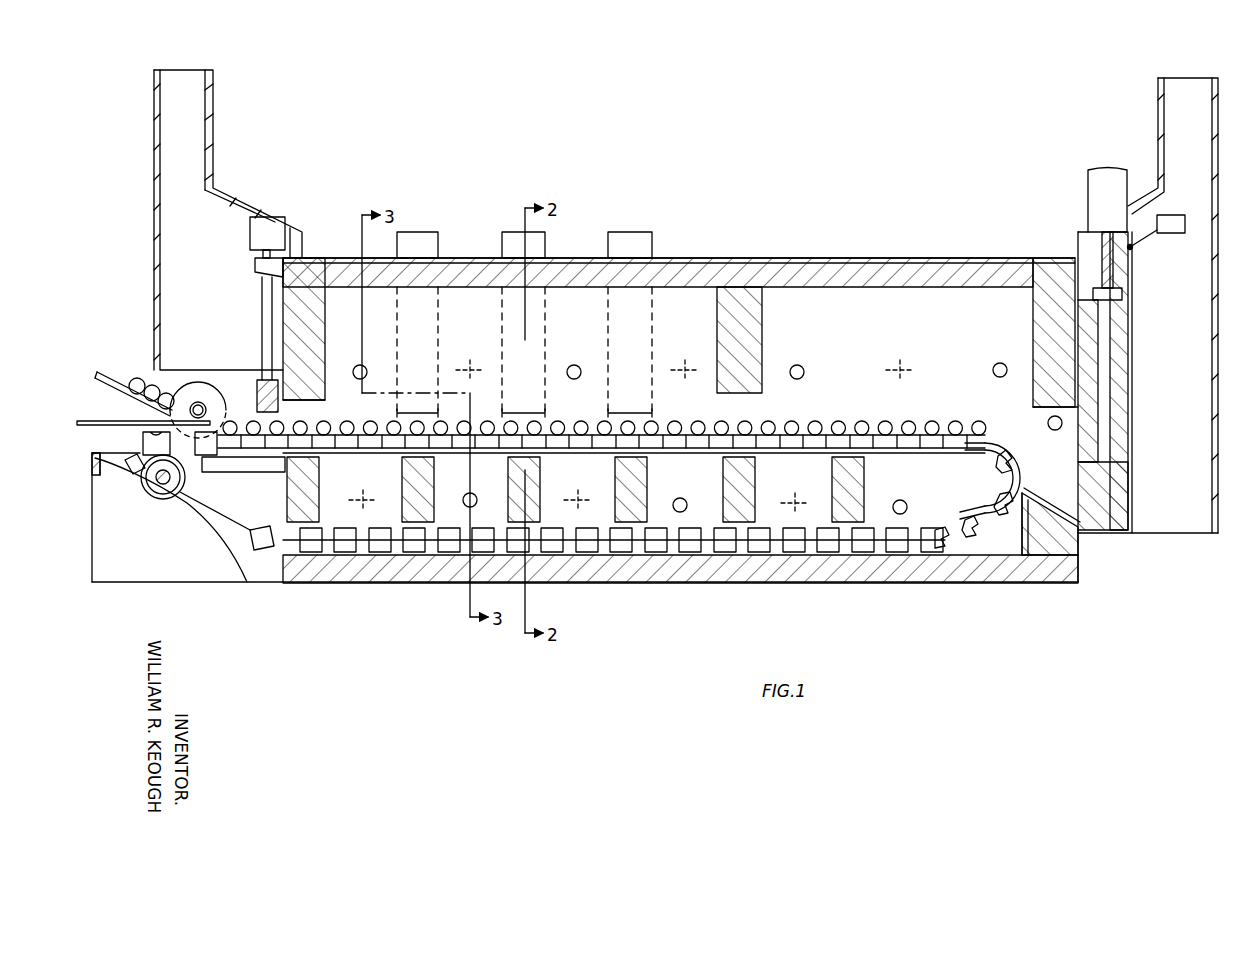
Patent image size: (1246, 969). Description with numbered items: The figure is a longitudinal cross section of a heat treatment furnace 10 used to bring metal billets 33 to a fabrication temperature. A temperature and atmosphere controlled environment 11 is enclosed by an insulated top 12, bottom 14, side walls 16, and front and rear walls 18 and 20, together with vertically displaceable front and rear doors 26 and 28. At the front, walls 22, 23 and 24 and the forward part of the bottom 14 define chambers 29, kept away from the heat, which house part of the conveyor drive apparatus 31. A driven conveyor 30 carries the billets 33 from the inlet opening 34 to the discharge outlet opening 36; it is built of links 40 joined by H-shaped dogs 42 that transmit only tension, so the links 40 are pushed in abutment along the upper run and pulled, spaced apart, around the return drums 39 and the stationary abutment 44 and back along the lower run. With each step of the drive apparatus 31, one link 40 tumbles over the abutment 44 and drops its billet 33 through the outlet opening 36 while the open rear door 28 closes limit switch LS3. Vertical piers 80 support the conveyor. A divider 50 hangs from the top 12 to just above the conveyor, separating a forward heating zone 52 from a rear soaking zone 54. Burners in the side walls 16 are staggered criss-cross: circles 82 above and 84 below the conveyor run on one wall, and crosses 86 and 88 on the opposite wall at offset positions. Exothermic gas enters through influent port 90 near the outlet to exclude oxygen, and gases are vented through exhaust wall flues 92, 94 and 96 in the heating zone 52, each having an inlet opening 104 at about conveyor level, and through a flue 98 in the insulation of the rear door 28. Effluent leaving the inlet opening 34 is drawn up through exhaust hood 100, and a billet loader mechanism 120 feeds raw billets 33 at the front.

The heat treatment furnace 10 is at (847, 256).
The temperature and atmosphere controlled environment 11 is at (686, 324).
The top 12 is at (796, 258).
The bottom 14 is at (715, 584).
The side walls 16 is at (137, 557).
The front wall 18 is at (270, 322).
The rear wall 20 is at (1072, 325).
The wall 22 is at (94, 460).
The wall 23 is at (120, 471).
The wall 24 is at (97, 420).
The front door 26 is at (258, 393).
The rear door 28 is at (1118, 393).
The chambers 29 is at (240, 509).
The driven conveyor 30 is at (566, 430).
The conveyor drive apparatus 31 is at (136, 446).
The billets 33 is at (346, 424).
The inlet opening 34 is at (262, 416).
The discharge outlet opening 36 is at (1080, 528).
The return drums 39 is at (172, 492).
The links 40 is at (783, 442).
The dogs 42 is at (990, 456).
The stationary abutment 44 is at (975, 466).
The divider 50 is at (762, 352).
The heating zone 52 is at (574, 322).
The soaking zone 54 is at (918, 313).
The vertical piers 80 is at (287, 493).
The burners 82 is at (365, 367).
The burners 84 is at (475, 494).
The burners 86 is at (466, 368).
The burners 88 is at (360, 498).
The exothermic gas influent port 90 is at (1050, 430).
The exhaust wall flue 92 is at (438, 242).
The exhaust wall flue 94 is at (545, 242).
The exhaust wall flue 96 is at (652, 242).
The flue 98 is at (1105, 352).
The exhaust hood 100 is at (212, 130).
The inlet opening 104 is at (412, 412).
The billet loader mechanism 120 is at (115, 374).
The limit switch LS3 is at (1170, 235).